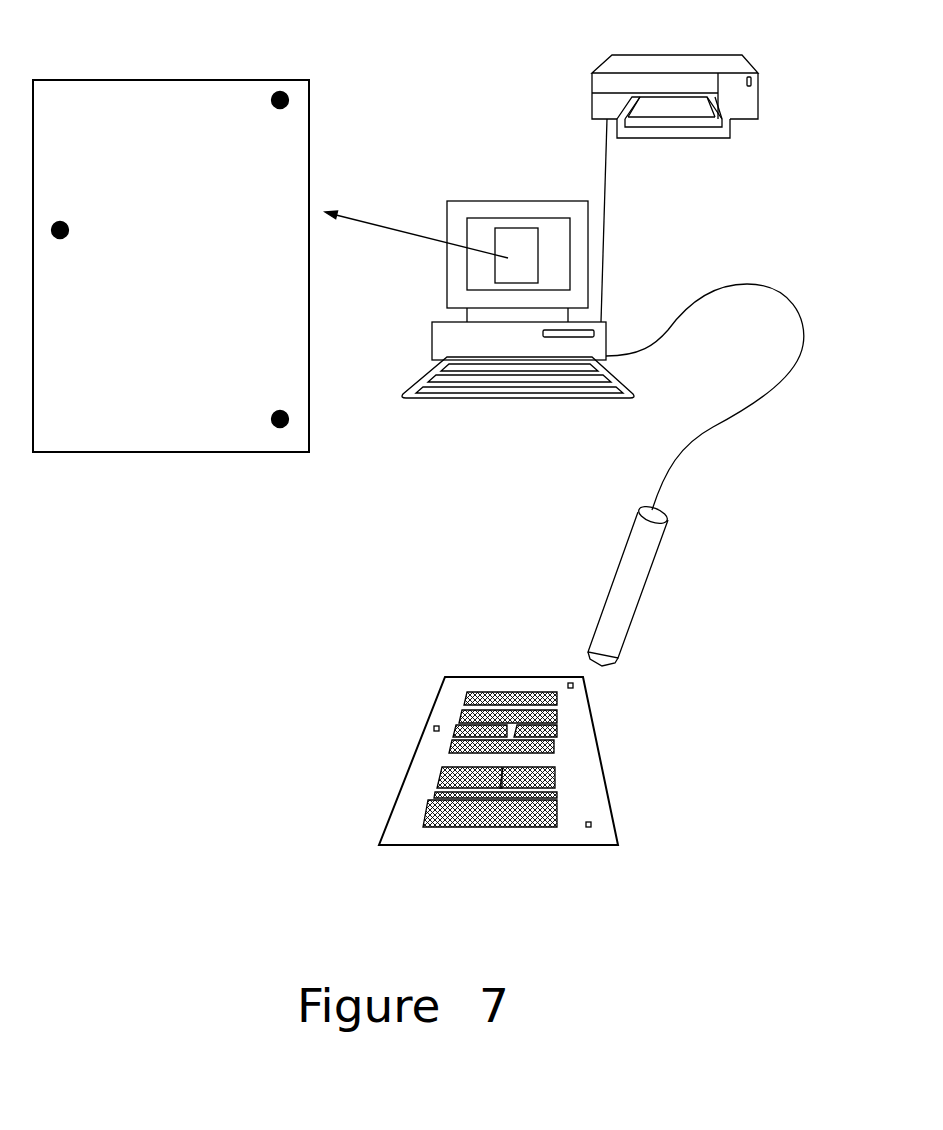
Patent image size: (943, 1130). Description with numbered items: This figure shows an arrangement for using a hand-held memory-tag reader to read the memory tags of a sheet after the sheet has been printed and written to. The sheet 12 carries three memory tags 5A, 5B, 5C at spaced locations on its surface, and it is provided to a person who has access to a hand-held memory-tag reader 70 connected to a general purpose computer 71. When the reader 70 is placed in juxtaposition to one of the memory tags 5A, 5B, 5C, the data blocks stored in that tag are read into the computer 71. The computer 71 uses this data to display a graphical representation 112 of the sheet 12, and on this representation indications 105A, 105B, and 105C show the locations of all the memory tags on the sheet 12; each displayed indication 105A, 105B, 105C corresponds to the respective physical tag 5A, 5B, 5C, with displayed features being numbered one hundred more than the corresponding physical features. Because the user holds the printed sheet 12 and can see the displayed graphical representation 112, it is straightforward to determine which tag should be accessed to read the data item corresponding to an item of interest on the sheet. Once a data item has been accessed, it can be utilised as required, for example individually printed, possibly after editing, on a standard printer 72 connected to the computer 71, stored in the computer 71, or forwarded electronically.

The graphical representation 112 is at (102, 70).
The tag location indication 105A is at (279, 92).
The tag location indication 105B is at (64, 224).
The tag location indication 105C is at (278, 428).
The general purpose computer 71 is at (505, 195).
The standard printer 72 is at (743, 113).
The hand-held memory-tag reader 70 is at (635, 567).
The sheet 12 is at (608, 785).
The memory tag 5A is at (575, 688).
The memory tag 5B is at (433, 728).
The memory tag 5C is at (594, 825).